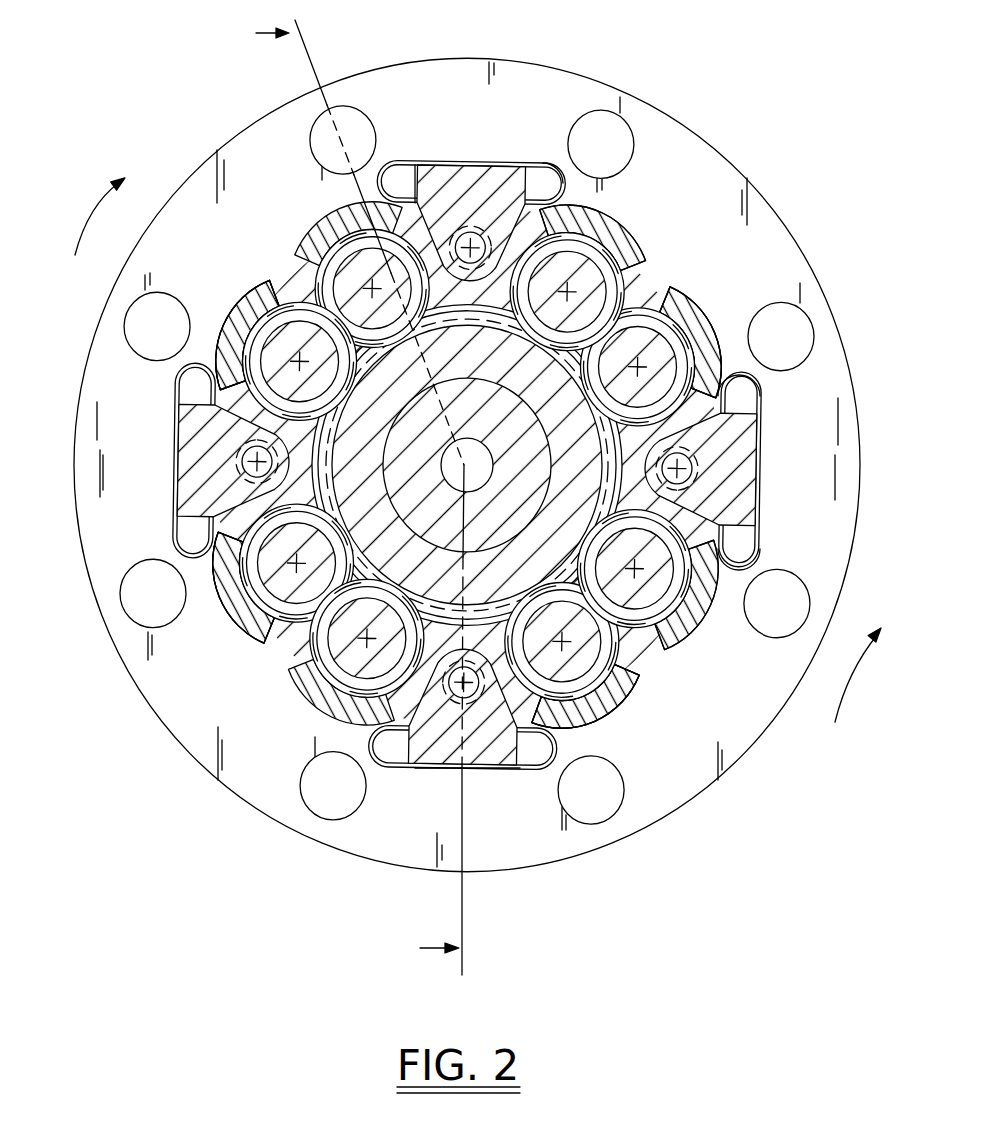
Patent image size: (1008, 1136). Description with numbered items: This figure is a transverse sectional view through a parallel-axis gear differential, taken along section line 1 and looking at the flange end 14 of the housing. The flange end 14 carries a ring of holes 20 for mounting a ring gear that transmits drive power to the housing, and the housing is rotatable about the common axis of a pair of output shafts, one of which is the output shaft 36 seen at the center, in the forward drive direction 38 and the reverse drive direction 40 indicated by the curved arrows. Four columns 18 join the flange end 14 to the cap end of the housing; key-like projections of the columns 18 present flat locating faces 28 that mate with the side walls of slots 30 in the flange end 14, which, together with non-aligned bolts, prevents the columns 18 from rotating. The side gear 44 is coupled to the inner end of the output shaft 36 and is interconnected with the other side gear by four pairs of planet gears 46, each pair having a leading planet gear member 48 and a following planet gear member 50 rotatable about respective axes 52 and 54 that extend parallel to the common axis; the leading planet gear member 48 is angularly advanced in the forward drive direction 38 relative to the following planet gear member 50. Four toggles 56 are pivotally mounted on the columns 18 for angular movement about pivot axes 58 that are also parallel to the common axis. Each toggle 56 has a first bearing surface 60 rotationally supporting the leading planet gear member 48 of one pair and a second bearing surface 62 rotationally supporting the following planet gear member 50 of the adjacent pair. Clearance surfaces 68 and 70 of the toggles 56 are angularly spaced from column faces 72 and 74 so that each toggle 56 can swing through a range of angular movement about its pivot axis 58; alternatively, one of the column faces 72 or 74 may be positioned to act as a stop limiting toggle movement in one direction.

The section line 1- 1 is at (371, 492).
The flange end 14 is at (570, 852).
The columns 18 is at (480, 178).
The holes 20 is at (350, 108).
The flat locating faces 28 is at (476, 769).
The slots 30 is at (383, 168).
The output shaft 36 is at (499, 508).
The forward drive direction 38 is at (96, 212).
The reverse drive direction 40 is at (856, 690).
The side gear 44 is at (392, 575).
The pairs of planet gears 46 is at (298, 642).
The leading planet gear member 48 is at (680, 330).
The following planet gear member 50 is at (622, 272).
The axis of leading planet gear member 52 is at (604, 706).
The axis of following planet gear member 54 is at (243, 316).
The toggles 56 is at (313, 240).
The pivot axes 58 is at (695, 468).
The first bearing surface 60 is at (702, 328).
The second bearing surface 62 is at (614, 250).
The clearance surface 68 is at (507, 198).
The clearance surface 70 is at (432, 170).
The column face 72 is at (748, 556).
The column face 74 is at (747, 402).